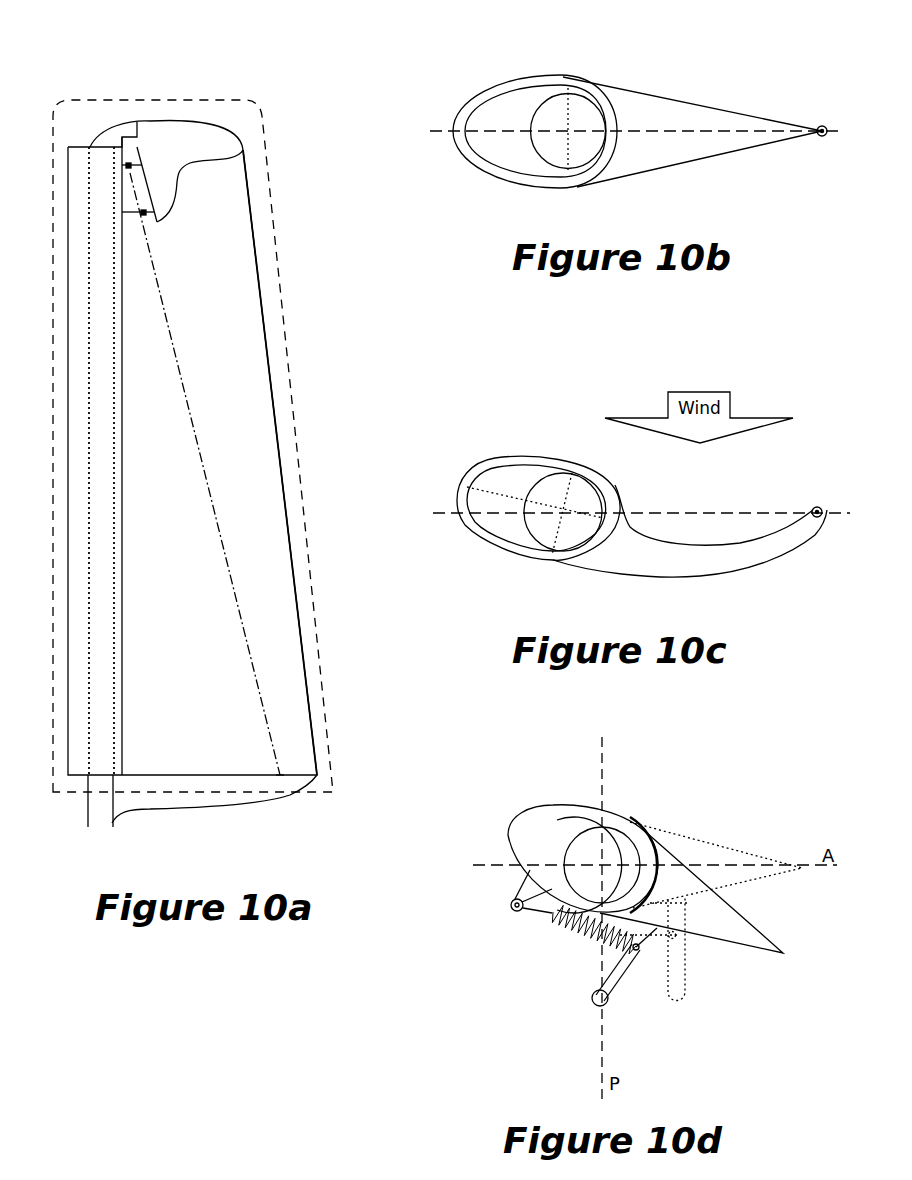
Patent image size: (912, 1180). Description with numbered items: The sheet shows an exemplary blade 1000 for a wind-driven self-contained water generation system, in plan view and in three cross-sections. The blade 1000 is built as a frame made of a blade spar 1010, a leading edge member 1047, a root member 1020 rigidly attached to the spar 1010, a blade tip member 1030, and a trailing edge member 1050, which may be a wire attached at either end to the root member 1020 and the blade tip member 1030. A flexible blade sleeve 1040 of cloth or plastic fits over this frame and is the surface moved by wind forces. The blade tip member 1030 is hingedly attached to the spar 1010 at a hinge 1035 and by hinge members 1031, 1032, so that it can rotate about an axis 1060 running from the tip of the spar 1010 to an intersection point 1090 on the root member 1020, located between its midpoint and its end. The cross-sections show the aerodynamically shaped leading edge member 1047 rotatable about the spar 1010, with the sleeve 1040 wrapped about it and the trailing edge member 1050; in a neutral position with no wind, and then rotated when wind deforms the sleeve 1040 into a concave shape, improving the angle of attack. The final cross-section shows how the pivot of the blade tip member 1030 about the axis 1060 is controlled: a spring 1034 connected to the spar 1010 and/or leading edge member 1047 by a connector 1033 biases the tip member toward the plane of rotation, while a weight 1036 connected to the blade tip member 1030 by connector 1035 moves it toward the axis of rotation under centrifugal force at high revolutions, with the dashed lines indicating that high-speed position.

In FIG. 10A, the blade 1000 is at (323, 103).
In FIG. 10A, the blade spar 1010 is at (113, 718).
In FIG. 10B, the blade spar 1010 is at (572, 90).
In FIG. 10C, the blade spar 1010 is at (563, 473).
In FIG. 10D, the blade spar 1010 is at (590, 830).
In FIG. 10A, the root member 1020 is at (192, 808).
In FIG. 10A, the blade tip member 1030 is at (190, 133).
In FIG. 10D, the blade tip member 1030 is at (767, 878).
In FIG. 10A, the hinge member 1031 is at (133, 215).
In FIG. 10A, the hinge member 1032 is at (130, 168).
In FIG. 10D, the connector 1033 is at (508, 917).
In FIG. 10D, the spring 1034 is at (580, 942).
In FIG. 10A, the hinge 1035 is at (137, 122).
In FIG. 10D, the hinge 1035 is at (663, 958).
In FIG. 10D, the weight 1036 is at (597, 1007).
In FIG. 10A, the blade sleeve 1040 is at (283, 347).
In FIG. 10B, the blade sleeve 1040 is at (660, 88).
In FIG. 10C, the blade sleeve 1040 is at (628, 523).
In FIG. 10A, the leading edge member 1047 is at (122, 533).
In FIG. 10B, the leading edge member 1047 is at (510, 88).
In FIG. 10C, the leading edge member 1047 is at (492, 460).
In FIG. 10D, the leading edge member 1047 is at (517, 808).
In FIG. 10A, the trailing edge member 1050 is at (283, 493).
In FIG. 10B, the trailing edge member 1050 is at (820, 126).
In FIG. 10C, the trailing edge member 1050 is at (813, 503).
In FIG. 10A, the axis 1060 is at (188, 407).
In FIG. 10A, the intersection point 1090 is at (280, 773).